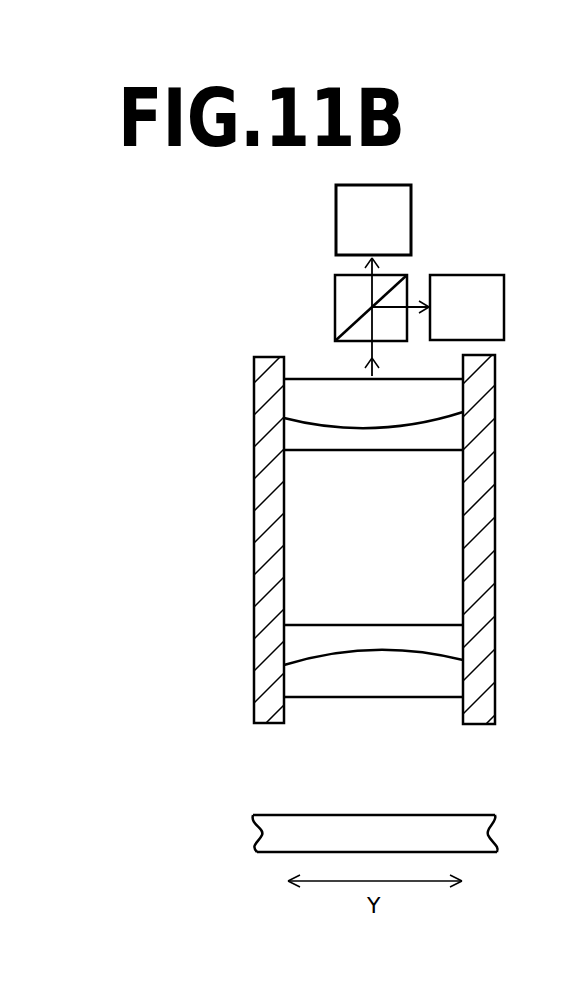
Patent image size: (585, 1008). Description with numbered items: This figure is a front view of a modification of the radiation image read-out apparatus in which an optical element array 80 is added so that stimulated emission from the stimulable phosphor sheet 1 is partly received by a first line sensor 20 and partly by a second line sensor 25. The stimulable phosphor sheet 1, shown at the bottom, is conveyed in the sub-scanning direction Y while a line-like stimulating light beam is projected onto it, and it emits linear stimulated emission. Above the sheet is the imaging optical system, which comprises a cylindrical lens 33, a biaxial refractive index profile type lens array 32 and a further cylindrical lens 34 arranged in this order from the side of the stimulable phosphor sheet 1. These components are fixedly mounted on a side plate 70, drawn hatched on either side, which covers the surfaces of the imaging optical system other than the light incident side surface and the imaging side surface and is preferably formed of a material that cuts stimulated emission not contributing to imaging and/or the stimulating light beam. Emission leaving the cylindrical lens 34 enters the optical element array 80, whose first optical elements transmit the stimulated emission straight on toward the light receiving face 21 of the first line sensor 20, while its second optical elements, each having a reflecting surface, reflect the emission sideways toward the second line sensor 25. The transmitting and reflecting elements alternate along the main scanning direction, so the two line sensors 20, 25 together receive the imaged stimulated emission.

The stimulable phosphor sheet 1 is at (493, 838).
The line sensor 20 is at (411, 206).
The light receiving face 21 is at (398, 257).
The second line sensor 25 is at (504, 312).
The biaxial refractive index profile type lens array 32 is at (310, 585).
The cylindrical lens 33 is at (305, 693).
The cylindrical lens 34 is at (301, 378).
The side plate 70 is at (265, 410).
The optical element array 80 is at (336, 290).